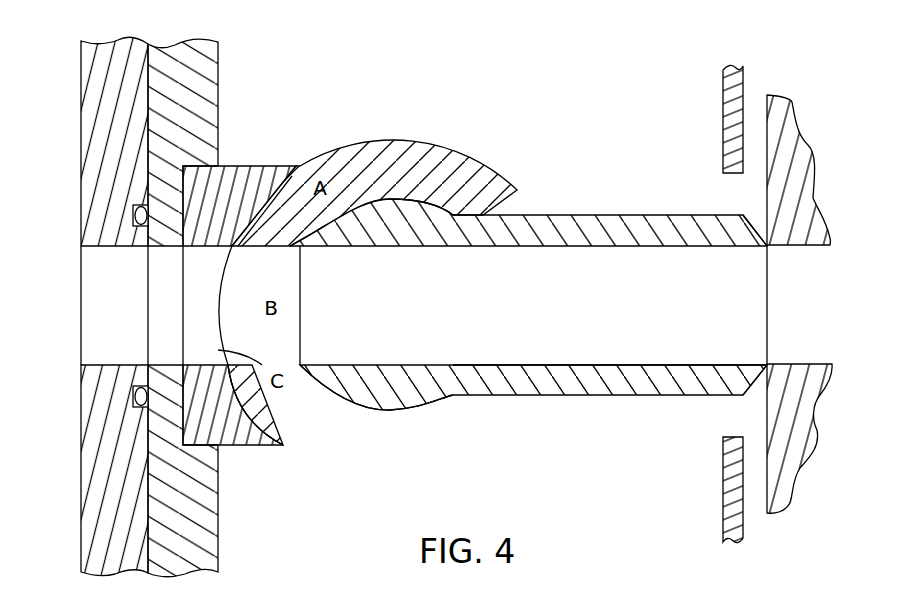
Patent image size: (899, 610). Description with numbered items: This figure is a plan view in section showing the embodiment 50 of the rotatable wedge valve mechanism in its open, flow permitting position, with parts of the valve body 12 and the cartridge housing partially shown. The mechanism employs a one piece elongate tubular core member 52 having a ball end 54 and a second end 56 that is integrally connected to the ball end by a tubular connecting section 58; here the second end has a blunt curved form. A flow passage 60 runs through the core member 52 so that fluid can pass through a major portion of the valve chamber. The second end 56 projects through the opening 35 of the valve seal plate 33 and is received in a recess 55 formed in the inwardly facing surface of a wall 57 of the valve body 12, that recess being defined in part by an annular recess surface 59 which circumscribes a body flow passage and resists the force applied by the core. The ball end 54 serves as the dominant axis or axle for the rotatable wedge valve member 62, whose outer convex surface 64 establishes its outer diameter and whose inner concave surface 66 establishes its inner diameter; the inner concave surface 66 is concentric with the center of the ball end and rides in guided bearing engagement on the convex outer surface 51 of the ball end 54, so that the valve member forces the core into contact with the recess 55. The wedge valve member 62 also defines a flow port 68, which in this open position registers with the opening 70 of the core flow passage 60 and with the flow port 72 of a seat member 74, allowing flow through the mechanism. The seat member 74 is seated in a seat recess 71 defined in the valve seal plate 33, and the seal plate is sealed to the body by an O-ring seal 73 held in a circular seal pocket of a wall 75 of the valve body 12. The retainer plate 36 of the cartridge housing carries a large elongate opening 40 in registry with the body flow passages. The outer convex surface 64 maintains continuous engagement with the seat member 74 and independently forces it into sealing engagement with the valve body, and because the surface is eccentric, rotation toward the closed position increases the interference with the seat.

The valve body 12 is at (813, 300).
The valve seal plate 33 is at (170, 129).
The opening 35 is at (165, 262).
The retainer plate 36 is at (730, 101).
The elongate opening 40 is at (737, 190).
The rotatable wedge valve embodiment 50 is at (252, 108).
The convex outer surface 51 is at (407, 402).
The one piece elongate tubular core member 52 is at (528, 260).
The ball end 54 is at (357, 395).
The recess 55 is at (770, 297).
The second end 56 is at (690, 383).
The wall 57 is at (785, 205).
The tubular connecting section 58 is at (533, 409).
The annular recess surface 59 is at (762, 244).
The flow passage 60 is at (738, 341).
The rotatable wedge valve member 62 is at (374, 165).
The outer convex surface 64 is at (323, 155).
The inner concave surface 66 is at (390, 213).
The flow port 68 is at (198, 305).
The opening 70 is at (218, 352).
The seat recess 71 is at (133, 416).
The flow port 72 is at (215, 325).
The O-ring seal 73 is at (133, 214).
The seat member 74 is at (215, 187).
The wall 75 is at (115, 468).